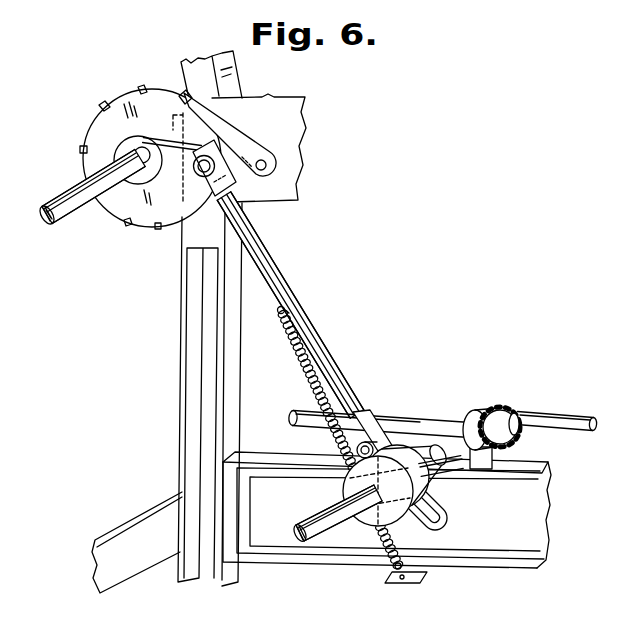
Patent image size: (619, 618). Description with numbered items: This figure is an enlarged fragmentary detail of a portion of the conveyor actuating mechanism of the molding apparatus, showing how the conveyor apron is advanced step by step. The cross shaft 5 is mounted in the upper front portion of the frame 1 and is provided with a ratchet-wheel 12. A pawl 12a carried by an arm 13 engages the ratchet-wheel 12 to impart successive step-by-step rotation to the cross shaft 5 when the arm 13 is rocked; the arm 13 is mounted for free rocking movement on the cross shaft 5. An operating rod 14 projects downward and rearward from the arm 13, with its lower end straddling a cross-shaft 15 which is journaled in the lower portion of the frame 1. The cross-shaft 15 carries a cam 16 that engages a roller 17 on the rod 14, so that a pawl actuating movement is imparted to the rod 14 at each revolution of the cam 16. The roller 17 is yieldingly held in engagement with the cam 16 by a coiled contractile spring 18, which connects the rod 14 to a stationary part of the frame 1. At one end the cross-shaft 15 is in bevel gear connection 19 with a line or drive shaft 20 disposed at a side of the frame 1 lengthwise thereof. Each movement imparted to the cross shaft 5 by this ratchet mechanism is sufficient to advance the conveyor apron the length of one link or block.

The frame 1 is at (193, 410).
The cross shaft 5 is at (66, 224).
The ratchet-wheel 12 is at (115, 113).
The pawl 12a is at (232, 128).
The arm 13 is at (166, 212).
The operating rod 14 is at (276, 275).
The cross-shaft 15 is at (310, 518).
The cam 16 is at (403, 453).
The roller 17 is at (368, 437).
The coiled contractile spring 18 is at (305, 377).
The bevel gear connection 19 is at (488, 413).
The line or drive shaft 20 is at (563, 420).